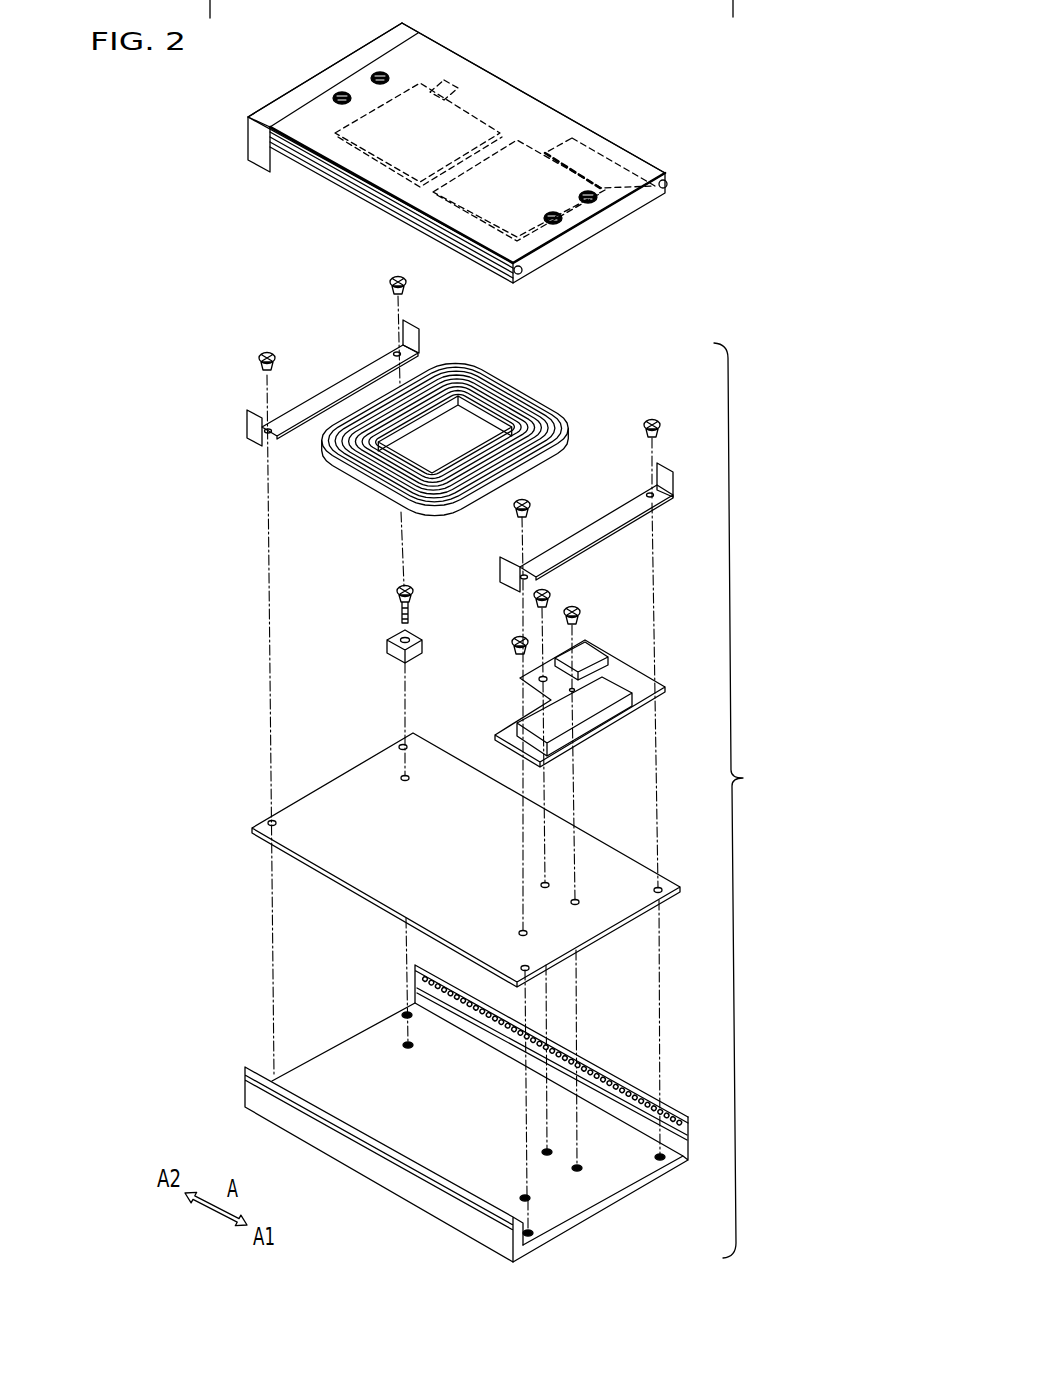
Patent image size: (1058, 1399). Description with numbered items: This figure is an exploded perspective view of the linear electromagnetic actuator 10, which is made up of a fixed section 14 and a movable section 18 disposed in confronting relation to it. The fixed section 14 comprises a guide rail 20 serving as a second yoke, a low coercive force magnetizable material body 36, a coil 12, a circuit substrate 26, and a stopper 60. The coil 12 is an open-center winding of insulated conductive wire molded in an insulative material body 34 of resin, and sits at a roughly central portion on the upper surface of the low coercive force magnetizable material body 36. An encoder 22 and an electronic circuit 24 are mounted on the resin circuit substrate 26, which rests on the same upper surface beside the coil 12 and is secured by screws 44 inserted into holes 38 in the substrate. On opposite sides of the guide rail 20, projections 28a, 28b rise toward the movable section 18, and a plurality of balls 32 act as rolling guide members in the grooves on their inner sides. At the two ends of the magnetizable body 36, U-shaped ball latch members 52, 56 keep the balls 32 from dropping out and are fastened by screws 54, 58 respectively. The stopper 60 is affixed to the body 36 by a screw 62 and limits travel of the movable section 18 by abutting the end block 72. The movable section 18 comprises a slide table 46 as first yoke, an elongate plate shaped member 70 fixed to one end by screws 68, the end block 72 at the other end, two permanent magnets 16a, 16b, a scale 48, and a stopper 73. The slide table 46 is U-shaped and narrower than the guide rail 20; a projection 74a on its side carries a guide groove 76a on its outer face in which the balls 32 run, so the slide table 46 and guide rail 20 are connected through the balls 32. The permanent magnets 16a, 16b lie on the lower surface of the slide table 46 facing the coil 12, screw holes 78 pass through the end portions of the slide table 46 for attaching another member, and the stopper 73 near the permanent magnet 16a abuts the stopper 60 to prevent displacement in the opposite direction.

The linear electromagnetic actuator 10 is at (680, 44).
The coil 12 is at (509, 380).
The fixed section 14 is at (744, 800).
The permanent magnet 16a is at (480, 127).
The permanent magnet 16b is at (533, 156).
The movable section 18 is at (569, 91).
The guide rail 20 is at (556, 1240).
The encoder 22 is at (592, 655).
The electronic circuit 24 is at (606, 715).
The circuit substrate 26 is at (614, 683).
The projection 28a is at (362, 1165).
The projection 28b is at (602, 1078).
The balls 32 is at (615, 1092).
The insulative material body 34 is at (370, 466).
The low coercive force magnetizable material body 36 is at (352, 790).
The holes 38 is at (536, 678).
The screws 44 is at (575, 607).
The slide table 46 is at (525, 98).
The scale 48 is at (598, 178).
The ball latch member 52 is at (610, 520).
The screw 54 is at (642, 428).
The ball latch member 56 is at (340, 390).
The screw 58 is at (385, 286).
The stopper 60 is at (386, 647).
The screw 62 is at (395, 592).
The screws 68 is at (668, 186).
The plate shaped member 70 is at (593, 228).
The end block 72 is at (345, 75).
The stopper 73 is at (450, 77).
The projection 74a is at (378, 205).
The guide groove 76a is at (338, 172).
The screw holes 78 is at (380, 70).